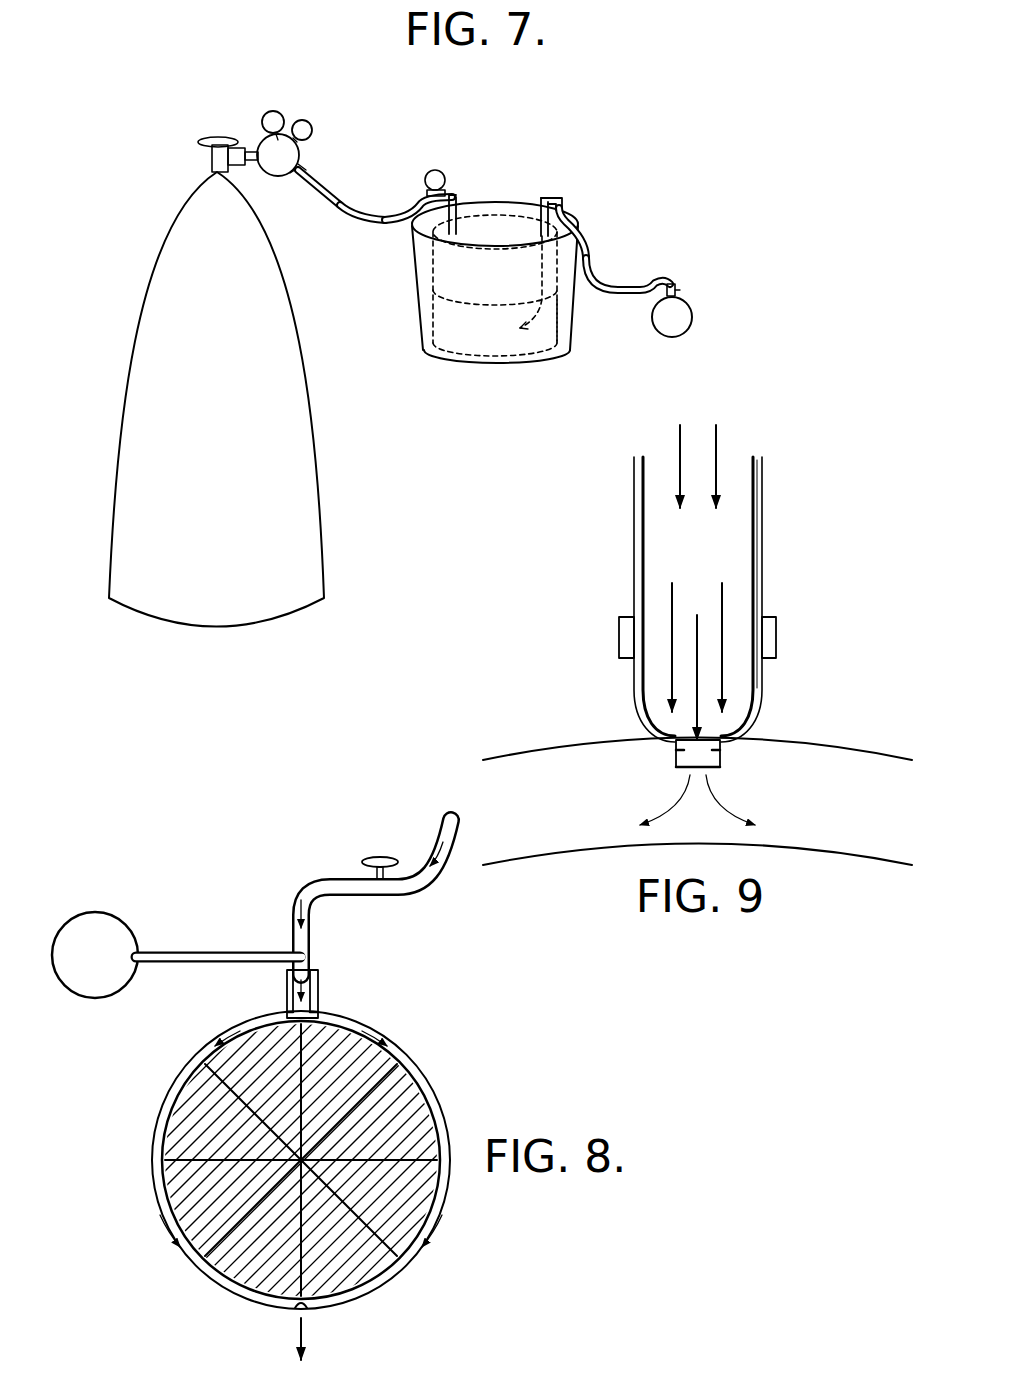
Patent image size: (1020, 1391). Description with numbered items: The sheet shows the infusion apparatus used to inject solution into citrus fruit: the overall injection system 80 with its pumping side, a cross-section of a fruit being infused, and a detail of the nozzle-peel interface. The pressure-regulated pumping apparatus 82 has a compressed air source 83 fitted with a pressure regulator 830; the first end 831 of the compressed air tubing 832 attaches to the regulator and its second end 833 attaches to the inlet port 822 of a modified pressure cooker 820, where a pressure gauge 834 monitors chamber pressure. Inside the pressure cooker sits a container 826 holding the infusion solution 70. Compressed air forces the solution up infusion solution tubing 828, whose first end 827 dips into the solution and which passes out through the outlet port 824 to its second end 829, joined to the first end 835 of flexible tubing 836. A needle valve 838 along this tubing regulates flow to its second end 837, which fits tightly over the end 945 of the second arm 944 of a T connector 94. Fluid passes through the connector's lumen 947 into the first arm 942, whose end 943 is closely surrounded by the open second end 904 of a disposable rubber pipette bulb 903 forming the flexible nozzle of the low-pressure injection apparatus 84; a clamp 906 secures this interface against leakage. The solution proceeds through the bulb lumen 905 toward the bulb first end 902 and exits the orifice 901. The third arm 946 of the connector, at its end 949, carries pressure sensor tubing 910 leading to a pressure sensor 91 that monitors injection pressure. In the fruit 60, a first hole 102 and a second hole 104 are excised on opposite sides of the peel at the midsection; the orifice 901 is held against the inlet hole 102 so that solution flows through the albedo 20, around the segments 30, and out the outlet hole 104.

In FIG. 8, the albedo 20 is at (410, 1058).
In FIG. 8, the segments 30 is at (400, 1092).
In FIG. 7, the fruit 60 is at (660, 325).
In FIG. 8, the fruit 60 is at (152, 1128).
In FIG. 7, the infusion solution 70 is at (452, 323).
In FIG. 9, the infusion solution 70 is at (697, 582).
In FIG. 7, the injection system 80 is at (548, 148).
In FIG. 7, the pressure-regulated pumping apparatus 82 is at (138, 236).
In FIG. 7, the compressed air source 83 is at (150, 398).
In FIG. 7, the low-pressure injection apparatus 84 is at (623, 332).
In FIG. 9, the low-pressure injection apparatus 84 is at (548, 592).
In FIG. 8, the pressure sensor 91 is at (90, 918).
In FIG. 7, the T connector 94 is at (680, 291).
In FIG. 8, the T connector 94 is at (290, 930).
In FIG. 8, the first hole 102 is at (286, 1010).
In FIG. 8, the second hole 104 is at (293, 1312).
In FIG. 7, the pressure cooker 820 is at (503, 363).
In FIG. 7, the inlet port 822 is at (460, 222).
In FIG. 7, the outlet port 824 is at (540, 225).
In FIG. 7, the container 826 is at (470, 348).
In FIG. 7, the first end of infusion solution tubing 827 is at (520, 340).
In FIG. 7, the infusion solution tubing 828 is at (543, 300).
In FIG. 7, the second end of infusion solution tubing 829 is at (562, 195).
In FIG. 7, the pressure regulator 830 is at (305, 121).
In FIG. 7, the first end of compressed air tubing 831 is at (318, 173).
In FIG. 7, the compressed air tubing 832 is at (345, 213).
In FIG. 7, the second end of compressed air tubing 833 is at (413, 205).
In FIG. 7, the pressure gauge 834 is at (435, 168).
In FIG. 7, the first end of flexible tubing 835 is at (580, 212).
In FIG. 7, the flexible tubing 836 is at (597, 272).
In FIG. 8, the flexible tubing 836 is at (416, 886).
In FIG. 7, the second end of flexible tubing 837 is at (672, 284).
In FIG. 8, the second end of flexible tubing 837 is at (312, 953).
In FIG. 8, the needle valve 838 is at (375, 855).
In FIG. 9, the orifice 901 is at (712, 770).
In FIG. 9, the first end of bulb 902 is at (720, 745).
In FIG. 9, the pipette bulb 903 is at (634, 532).
In FIG. 9, the open second end of bulb 904 is at (634, 490).
In FIG. 9, the bulb lumen 905 is at (676, 752).
In FIG. 9, the clamp 906 is at (619, 640).
In FIG. 8, the pressure sensor tubing 910 is at (160, 951).
In FIG. 9, the first arm of T connector 942 is at (762, 525).
In FIG. 9, the end of first arm 943 is at (757, 457).
In FIG. 8, the second arm of T connector 944 is at (312, 937).
In FIG. 8, the end of second arm 945 is at (296, 903).
In FIG. 8, the third arm of T connector 946 is at (238, 963).
In FIG. 9, the lumen of T connector 947 is at (735, 502).
In FIG. 8, the end of third arm 949 is at (240, 951).